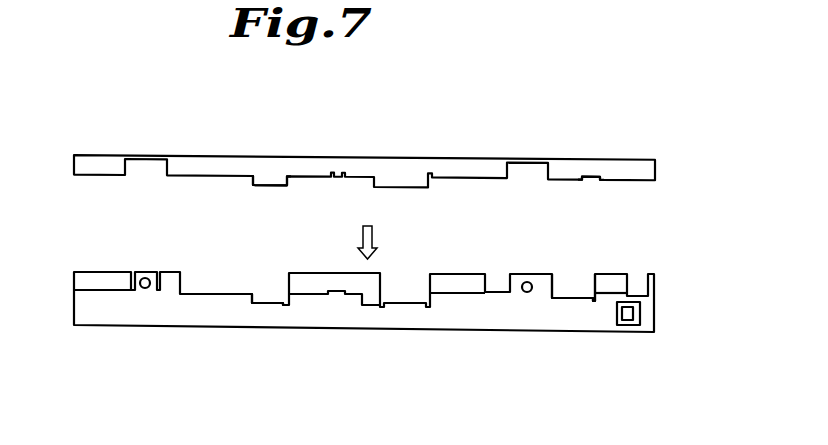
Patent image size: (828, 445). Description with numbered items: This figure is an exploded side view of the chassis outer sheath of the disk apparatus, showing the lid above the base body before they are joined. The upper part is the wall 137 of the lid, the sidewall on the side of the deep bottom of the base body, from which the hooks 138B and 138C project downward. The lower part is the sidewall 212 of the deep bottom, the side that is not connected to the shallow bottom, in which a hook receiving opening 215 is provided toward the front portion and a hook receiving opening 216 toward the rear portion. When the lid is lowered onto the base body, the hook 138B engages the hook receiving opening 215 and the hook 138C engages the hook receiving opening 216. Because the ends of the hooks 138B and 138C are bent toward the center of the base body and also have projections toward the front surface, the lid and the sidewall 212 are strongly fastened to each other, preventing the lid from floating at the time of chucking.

The wall 137 is at (379, 165).
The hook 138B is at (597, 178).
The hook 138C is at (288, 185).
The sidewall 212 is at (348, 320).
The hook receiving opening 215 is at (577, 298).
The hook receiving opening 216 is at (262, 305).